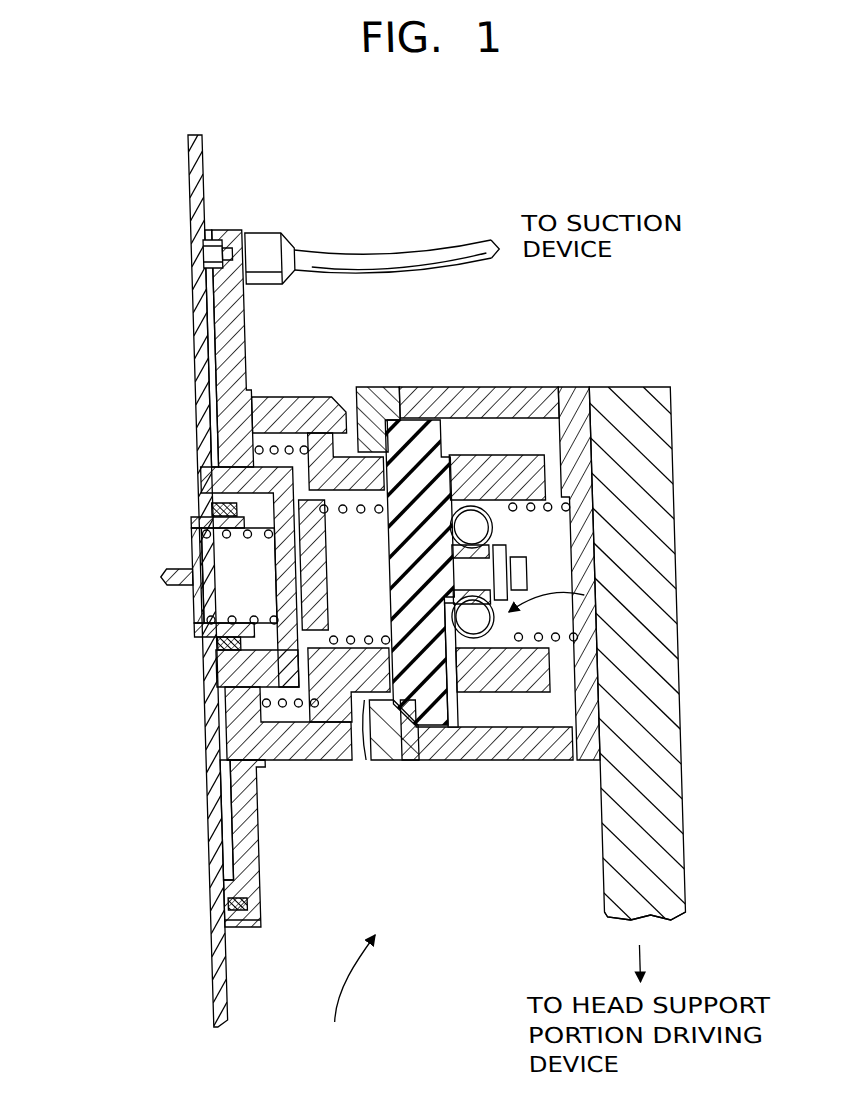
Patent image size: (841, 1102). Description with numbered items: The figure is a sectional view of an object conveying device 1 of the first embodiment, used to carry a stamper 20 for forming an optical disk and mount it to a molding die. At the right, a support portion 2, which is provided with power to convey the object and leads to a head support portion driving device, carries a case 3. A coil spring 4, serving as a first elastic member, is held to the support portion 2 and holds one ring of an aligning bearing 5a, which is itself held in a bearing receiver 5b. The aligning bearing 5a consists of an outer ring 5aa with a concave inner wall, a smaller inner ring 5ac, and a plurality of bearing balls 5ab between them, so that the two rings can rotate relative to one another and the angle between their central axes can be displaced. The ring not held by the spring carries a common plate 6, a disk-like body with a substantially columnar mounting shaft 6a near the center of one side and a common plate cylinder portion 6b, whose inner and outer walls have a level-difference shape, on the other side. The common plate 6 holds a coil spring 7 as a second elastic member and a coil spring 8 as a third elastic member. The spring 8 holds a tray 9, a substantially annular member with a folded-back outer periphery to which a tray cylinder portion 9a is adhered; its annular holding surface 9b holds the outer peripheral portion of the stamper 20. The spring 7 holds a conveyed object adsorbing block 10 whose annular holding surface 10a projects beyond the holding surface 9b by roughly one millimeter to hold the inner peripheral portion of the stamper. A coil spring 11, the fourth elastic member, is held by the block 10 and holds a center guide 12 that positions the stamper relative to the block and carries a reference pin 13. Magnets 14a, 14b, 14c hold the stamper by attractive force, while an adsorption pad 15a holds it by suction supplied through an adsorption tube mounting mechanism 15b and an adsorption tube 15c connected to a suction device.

The object conveying device 1 is at (330, 1067).
The support portion 2 is at (640, 422).
The case 3 is at (592, 746).
The coil spring 4 is at (582, 650).
The aligning bearing 5a is at (548, 645).
The outer ring 5aa is at (472, 462).
The bearing balls 5ab is at (575, 415).
The inner ring 5ac is at (500, 547).
The bearing receiver 5b is at (585, 688).
The common plate 6 is at (424, 420).
The mounting shaft 6a is at (526, 572).
The common plate cylinder portion 6b is at (336, 445).
The coil spring 7 is at (372, 745).
The coil spring 8 is at (282, 398).
The tray 9 is at (238, 826).
The tray cylinder portion 9a is at (250, 757).
The holding surface 9b is at (228, 920).
The conveyed object adsorbing block 10 is at (230, 708).
The holding surface 10a is at (218, 676).
The coil spring 11 is at (202, 532).
The center guide 12 is at (202, 622).
The reference pin 13 is at (165, 577).
The magnet 14a is at (213, 508).
The magnet 14b is at (215, 644).
The magnet 14c is at (218, 905).
The adsorption pad 15a is at (192, 256).
The adsorption tube mounting mechanism 15b is at (274, 243).
The adsorption tube 15c is at (424, 252).
The stamper 20 is at (205, 988).